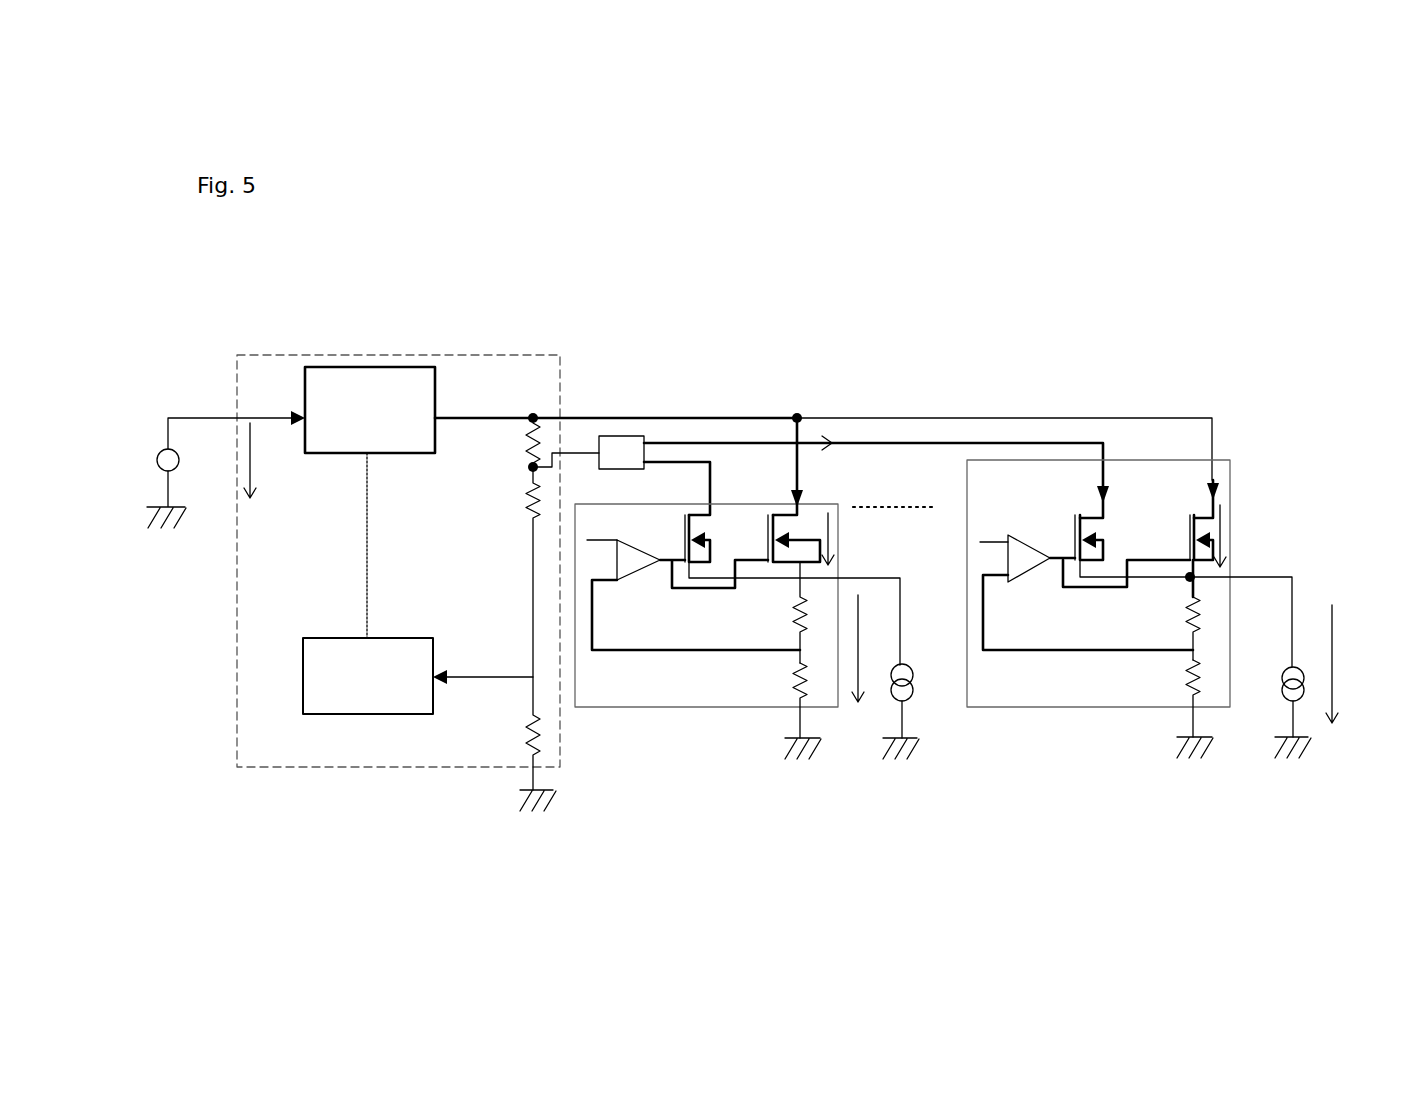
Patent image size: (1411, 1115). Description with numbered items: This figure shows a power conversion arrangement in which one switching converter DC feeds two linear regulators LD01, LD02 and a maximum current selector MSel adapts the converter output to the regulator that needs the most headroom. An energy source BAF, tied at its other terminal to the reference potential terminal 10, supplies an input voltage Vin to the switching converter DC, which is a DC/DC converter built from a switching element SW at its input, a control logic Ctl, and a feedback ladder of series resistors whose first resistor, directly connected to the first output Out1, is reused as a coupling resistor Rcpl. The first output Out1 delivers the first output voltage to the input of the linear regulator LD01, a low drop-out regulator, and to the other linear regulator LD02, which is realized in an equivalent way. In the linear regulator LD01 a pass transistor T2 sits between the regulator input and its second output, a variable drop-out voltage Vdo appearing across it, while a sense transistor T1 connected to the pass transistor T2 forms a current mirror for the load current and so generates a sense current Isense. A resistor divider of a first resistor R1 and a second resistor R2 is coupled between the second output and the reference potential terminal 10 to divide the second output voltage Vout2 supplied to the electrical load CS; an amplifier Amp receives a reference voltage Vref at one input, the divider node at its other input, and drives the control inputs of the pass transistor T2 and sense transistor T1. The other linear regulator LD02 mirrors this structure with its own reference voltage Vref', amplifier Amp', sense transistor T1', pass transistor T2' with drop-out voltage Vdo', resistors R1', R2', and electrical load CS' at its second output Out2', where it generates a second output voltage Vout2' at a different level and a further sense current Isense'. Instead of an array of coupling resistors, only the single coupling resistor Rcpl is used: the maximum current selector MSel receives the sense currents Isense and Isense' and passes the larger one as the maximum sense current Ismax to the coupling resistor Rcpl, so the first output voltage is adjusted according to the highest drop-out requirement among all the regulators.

The energy source BAF is at (160, 447).
The switching converter DC is at (338, 357).
The switching element SW is at (317, 457).
The control logic Ctl is at (295, 662).
The input voltage Vin is at (268, 460).
The first output Out1 is at (533, 418).
The coupling resistor Rcpl is at (518, 448).
The maximum sense current Ismax is at (580, 453).
The maximum current selector MSel is at (623, 436).
The sense current Isense is at (636, 488).
The other sense current Isense' is at (876, 477).
The sense transistor T1 is at (715, 508).
The pass transistor T2 is at (784, 466).
The drop-out voltage Vdo is at (873, 539).
The reference voltage Vref is at (610, 529).
The amplifier Amp is at (693, 595).
The first resistor R1 is at (769, 700).
The second resistor R2 is at (767, 612).
The second output voltage Vout2 is at (832, 632).
The electrical load CS is at (925, 701).
The linear regulator LD01 is at (688, 708).
The other linear regulator LD02 is at (1060, 707).
The reference voltage of other linear regulator Vref' is at (1001, 523).
The amplifier of other linear regulator Amp' is at (1088, 592).
The sense transistor of other linear regulator T1' is at (1121, 509).
The pass transistor of other linear regulator T2' is at (1229, 513).
The drop-out voltage of other linear regulator Vdo' is at (1265, 536).
The second output of other linear regulator Out2' is at (1186, 613).
The first resistor of other linear regulator R1' is at (1148, 698).
The second resistor of other linear regulator R2' is at (1150, 628).
The electrical load of other linear regulator CS' is at (1270, 702).
The second output voltage of other linear regulator Vout2' is at (1368, 664).
The reference potential terminal 10 is at (170, 537).